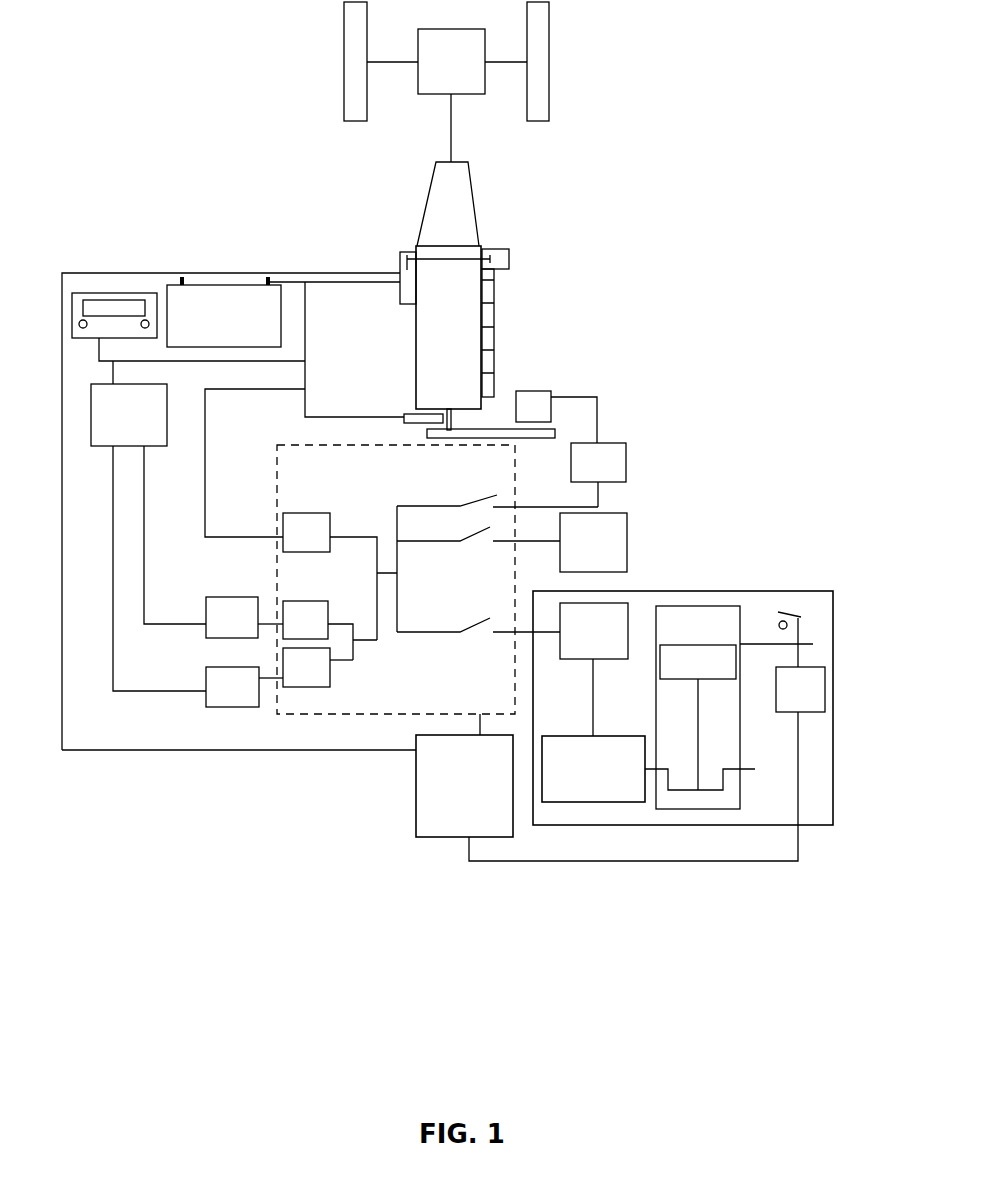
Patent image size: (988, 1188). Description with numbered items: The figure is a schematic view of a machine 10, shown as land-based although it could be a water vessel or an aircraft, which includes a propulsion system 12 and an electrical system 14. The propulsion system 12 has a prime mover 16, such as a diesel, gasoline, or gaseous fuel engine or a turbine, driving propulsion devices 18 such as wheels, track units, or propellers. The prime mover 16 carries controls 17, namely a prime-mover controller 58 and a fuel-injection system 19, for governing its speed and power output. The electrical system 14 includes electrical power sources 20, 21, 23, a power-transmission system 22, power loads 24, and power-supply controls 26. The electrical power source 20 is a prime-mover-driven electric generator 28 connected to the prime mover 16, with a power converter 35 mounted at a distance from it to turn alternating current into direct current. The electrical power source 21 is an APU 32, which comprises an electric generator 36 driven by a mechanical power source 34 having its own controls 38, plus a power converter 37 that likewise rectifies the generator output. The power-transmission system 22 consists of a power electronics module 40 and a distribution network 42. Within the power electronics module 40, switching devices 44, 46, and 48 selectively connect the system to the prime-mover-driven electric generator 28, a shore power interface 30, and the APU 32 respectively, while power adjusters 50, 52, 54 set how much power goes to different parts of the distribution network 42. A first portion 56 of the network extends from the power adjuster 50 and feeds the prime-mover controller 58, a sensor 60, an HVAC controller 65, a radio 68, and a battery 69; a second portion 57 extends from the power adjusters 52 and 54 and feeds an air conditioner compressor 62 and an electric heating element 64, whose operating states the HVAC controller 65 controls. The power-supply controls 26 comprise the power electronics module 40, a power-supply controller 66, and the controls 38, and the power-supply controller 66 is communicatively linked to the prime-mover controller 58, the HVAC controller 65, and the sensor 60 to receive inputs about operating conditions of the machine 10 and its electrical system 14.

The machine 10 is at (686, 163).
The propulsion system 12 is at (362, 168).
The electrical system 14 is at (375, 935).
The prime mover 16 is at (448, 327).
The controls 17 is at (413, 240).
The propulsion devices 18 is at (357, 62).
The fuel-injection system 19 is at (451, 423).
The electrical power source 20 is at (561, 414).
The electrical power source 21 is at (690, 575).
The power-transmission system 22 is at (287, 773).
The electrical power source 23 is at (638, 527).
The power loads 24 is at (402, 405).
The power-supply controls 26 is at (385, 730).
The prime-mover-driven electric generator 28 is at (533, 403).
The shore power interface 30 is at (593, 542).
The APU (auxiliary power unit) 32 is at (801, 612).
The mechanical power source 34 is at (716, 627).
The power converter 35 is at (598, 475).
The electric generator 36 is at (495, 311).
The power converter 37 is at (594, 669).
The controls 38 is at (793, 683).
The power electronics module 40 is at (279, 716).
The distribution network 42 is at (178, 772).
The switching device 44 is at (490, 487).
The switching device 46 is at (470, 526).
The switching device 48 is at (474, 612).
The power adjuster 50 is at (301, 514).
The power adjuster 52 is at (330, 630).
The power adjuster 54 is at (318, 667).
The first portion of distribution network 56 is at (243, 547).
The second portion of distribution network 57 is at (271, 601).
The prime-mover controller 58 is at (400, 250).
The sensor 60 is at (410, 418).
The air conditioner compressor 62 is at (244, 617).
The electric heating element 64 is at (244, 687).
The HVAC controller 65 is at (148, 526).
The power-supply controller 66 is at (464, 775).
The radio 68 is at (109, 292).
The battery 69 is at (224, 312).